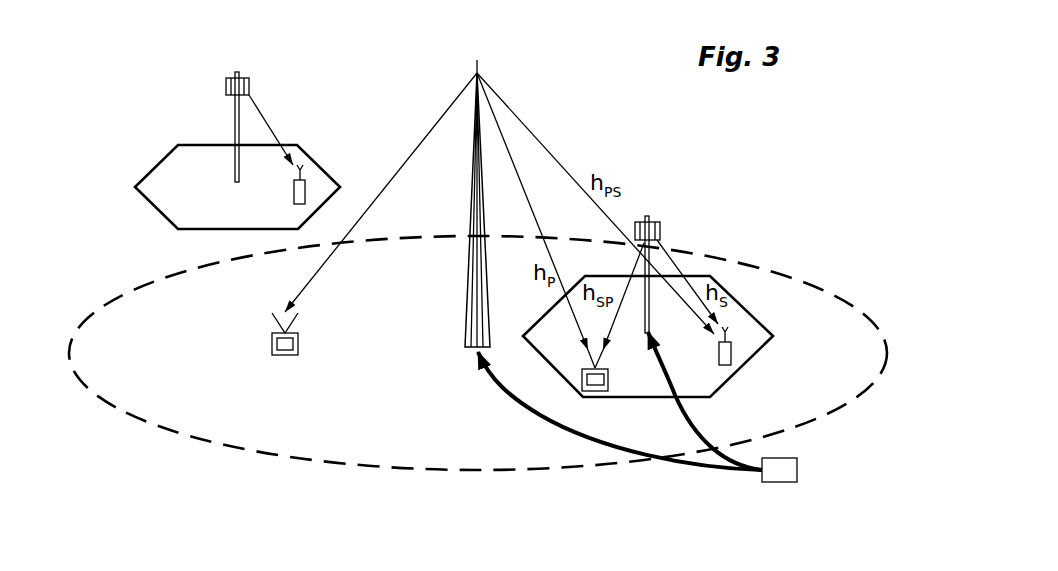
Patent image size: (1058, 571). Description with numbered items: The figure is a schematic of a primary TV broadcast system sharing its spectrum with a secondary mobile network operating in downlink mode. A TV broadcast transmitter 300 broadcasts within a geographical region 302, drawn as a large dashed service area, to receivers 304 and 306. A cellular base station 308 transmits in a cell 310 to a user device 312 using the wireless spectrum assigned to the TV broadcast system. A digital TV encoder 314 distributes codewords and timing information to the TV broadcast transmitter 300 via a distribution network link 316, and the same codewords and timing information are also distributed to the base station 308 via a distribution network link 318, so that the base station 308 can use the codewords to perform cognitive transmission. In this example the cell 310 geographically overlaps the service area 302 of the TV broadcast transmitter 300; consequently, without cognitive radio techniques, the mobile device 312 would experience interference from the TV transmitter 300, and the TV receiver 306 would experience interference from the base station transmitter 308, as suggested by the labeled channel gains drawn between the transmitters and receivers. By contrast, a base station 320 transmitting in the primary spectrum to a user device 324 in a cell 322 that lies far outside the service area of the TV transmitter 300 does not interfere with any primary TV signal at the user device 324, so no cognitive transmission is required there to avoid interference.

The TV broadcast transmitter 300 is at (474, 74).
The geographical region 302 is at (97, 312).
The receiver 304 is at (272, 345).
The TV receiver 306 is at (597, 392).
The cellular base station 308 is at (655, 215).
The cell 310 is at (745, 305).
The user device 312 is at (733, 348).
The digital TV encoder 314 is at (772, 483).
The distribution network link 316 is at (500, 405).
The distribution network link 318 is at (695, 432).
The base station 320 is at (226, 86).
The cell 322 is at (158, 165).
The user device 324 is at (310, 162).